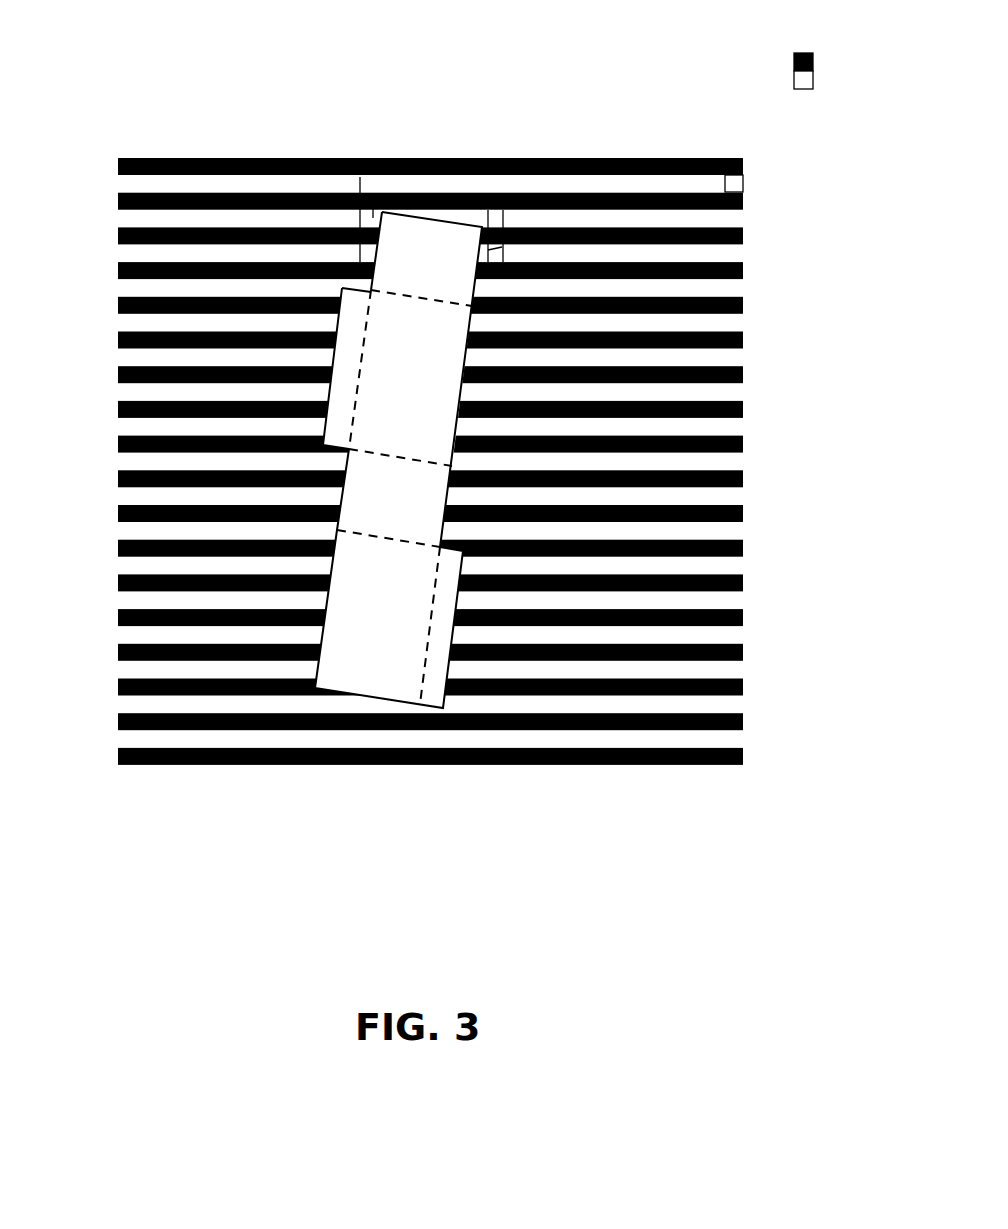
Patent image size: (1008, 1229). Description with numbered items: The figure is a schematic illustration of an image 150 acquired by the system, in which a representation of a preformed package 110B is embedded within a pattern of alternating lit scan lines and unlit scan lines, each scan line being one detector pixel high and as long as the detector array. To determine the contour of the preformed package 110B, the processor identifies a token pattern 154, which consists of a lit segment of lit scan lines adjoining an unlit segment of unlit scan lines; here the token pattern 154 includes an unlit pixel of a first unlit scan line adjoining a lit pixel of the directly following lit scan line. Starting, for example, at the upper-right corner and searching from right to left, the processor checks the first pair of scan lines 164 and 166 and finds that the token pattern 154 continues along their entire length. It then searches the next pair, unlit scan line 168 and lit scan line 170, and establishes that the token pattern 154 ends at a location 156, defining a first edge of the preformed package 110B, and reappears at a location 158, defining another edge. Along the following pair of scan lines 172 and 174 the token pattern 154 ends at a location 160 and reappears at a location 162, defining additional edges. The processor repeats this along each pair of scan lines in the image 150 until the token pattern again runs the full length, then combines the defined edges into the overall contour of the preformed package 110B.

The image 150 is at (164, 44).
The token pattern 154 is at (732, 158).
The location 156 is at (490, 210).
The location 158 is at (373, 217).
The location 160 is at (517, 228).
The location 162 is at (355, 251).
The unlit scan line 164 is at (118, 163).
The lit scan line 166 is at (118, 185).
The unlit scan line 168 is at (743, 200).
The lit scan line 170 is at (740, 217).
The scan line 172 is at (118, 232).
The scan line 174 is at (118, 256).
The preformed package 110B is at (380, 697).